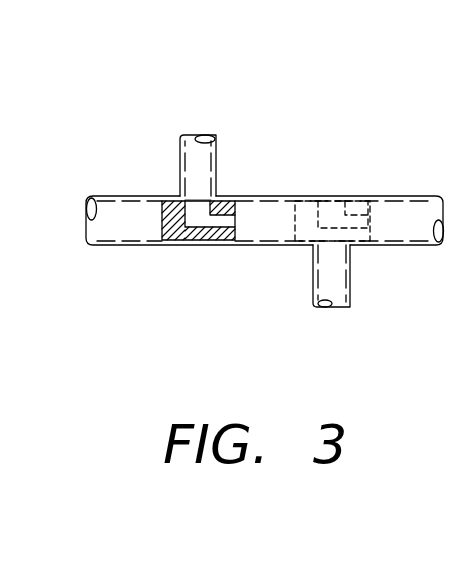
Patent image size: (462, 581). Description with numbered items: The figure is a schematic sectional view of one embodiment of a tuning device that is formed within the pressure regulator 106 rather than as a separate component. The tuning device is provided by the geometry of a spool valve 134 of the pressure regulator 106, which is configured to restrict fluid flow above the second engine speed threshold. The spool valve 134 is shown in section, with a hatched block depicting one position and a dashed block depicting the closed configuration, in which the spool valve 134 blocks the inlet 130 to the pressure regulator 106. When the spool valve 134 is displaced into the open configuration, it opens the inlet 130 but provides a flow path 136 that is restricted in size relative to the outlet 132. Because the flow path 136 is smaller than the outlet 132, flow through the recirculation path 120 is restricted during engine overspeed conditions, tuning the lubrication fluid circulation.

The pressure regulator 106 is at (241, 271).
The recirculation path 120 is at (202, 120).
The inlet 130 is at (352, 277).
The outlet 132 is at (207, 139).
The spool valve 134 is at (313, 198).
The flow path 136 is at (195, 201).